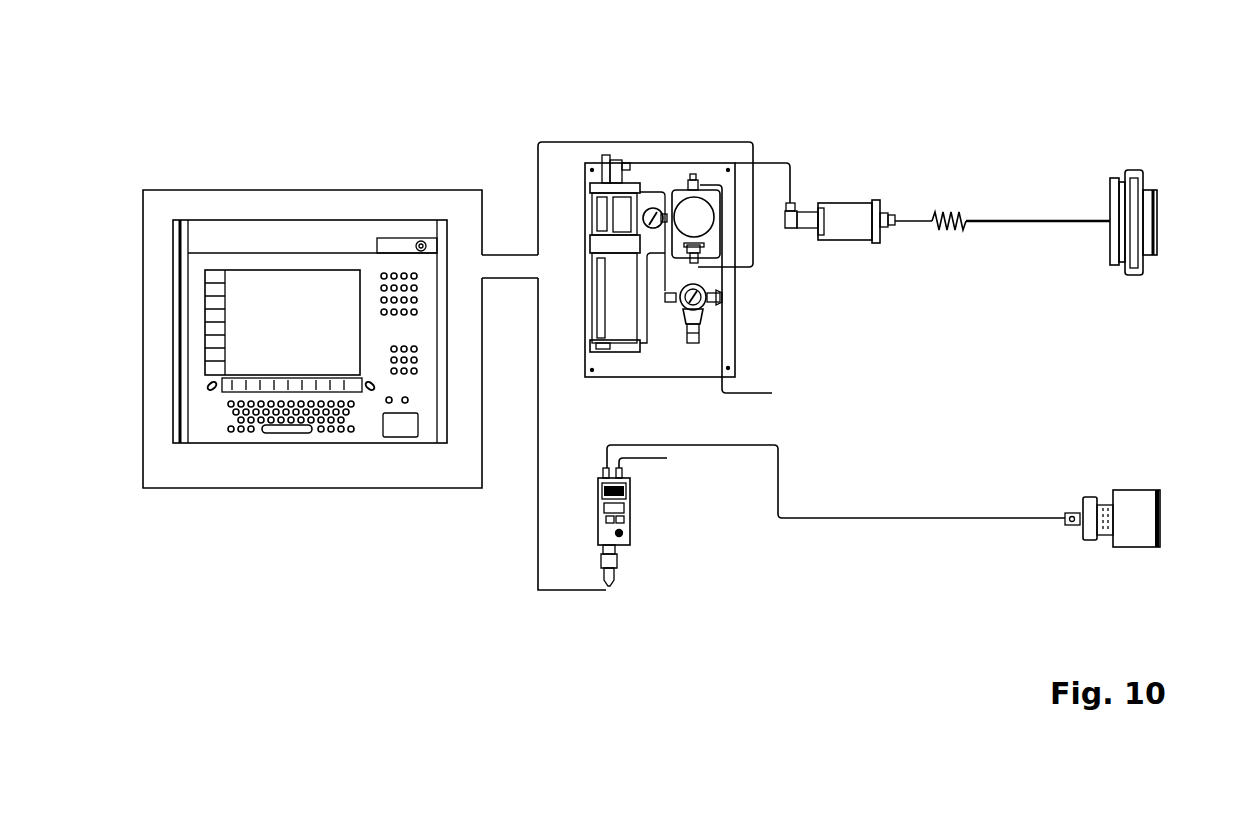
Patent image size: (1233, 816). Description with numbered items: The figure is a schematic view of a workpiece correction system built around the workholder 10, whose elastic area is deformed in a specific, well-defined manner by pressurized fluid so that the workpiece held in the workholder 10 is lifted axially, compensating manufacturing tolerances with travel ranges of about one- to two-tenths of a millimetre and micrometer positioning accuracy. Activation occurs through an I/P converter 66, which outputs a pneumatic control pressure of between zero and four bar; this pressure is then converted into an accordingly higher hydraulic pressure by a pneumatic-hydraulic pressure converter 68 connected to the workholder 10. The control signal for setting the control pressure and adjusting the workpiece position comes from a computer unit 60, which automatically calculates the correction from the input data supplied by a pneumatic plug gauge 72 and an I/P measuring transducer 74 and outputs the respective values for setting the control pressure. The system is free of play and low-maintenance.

The workholder 10 is at (1130, 173).
The controller with display and keyboard 60 is at (277, 204).
The I/P converter 66 is at (735, 318).
The pneumatic-hydraulic pressure converter 68 is at (845, 226).
The pneumatic plug gauge 72 is at (1138, 512).
The I/P measuring transducer 74 is at (631, 526).